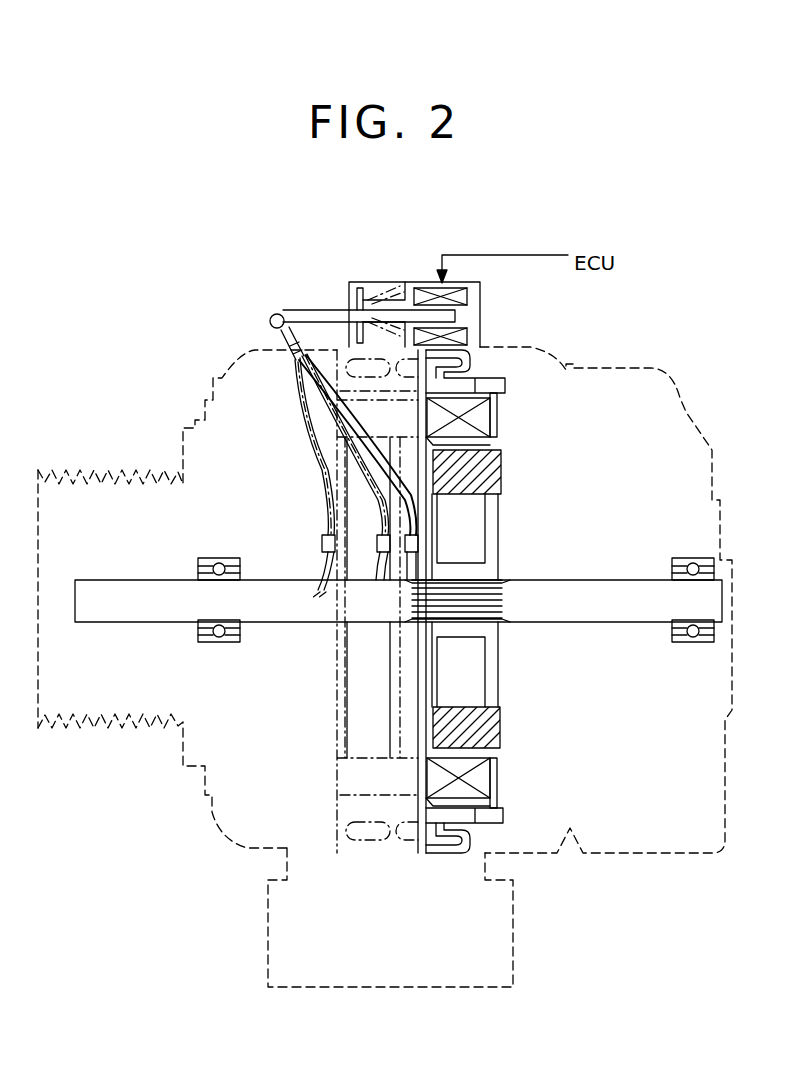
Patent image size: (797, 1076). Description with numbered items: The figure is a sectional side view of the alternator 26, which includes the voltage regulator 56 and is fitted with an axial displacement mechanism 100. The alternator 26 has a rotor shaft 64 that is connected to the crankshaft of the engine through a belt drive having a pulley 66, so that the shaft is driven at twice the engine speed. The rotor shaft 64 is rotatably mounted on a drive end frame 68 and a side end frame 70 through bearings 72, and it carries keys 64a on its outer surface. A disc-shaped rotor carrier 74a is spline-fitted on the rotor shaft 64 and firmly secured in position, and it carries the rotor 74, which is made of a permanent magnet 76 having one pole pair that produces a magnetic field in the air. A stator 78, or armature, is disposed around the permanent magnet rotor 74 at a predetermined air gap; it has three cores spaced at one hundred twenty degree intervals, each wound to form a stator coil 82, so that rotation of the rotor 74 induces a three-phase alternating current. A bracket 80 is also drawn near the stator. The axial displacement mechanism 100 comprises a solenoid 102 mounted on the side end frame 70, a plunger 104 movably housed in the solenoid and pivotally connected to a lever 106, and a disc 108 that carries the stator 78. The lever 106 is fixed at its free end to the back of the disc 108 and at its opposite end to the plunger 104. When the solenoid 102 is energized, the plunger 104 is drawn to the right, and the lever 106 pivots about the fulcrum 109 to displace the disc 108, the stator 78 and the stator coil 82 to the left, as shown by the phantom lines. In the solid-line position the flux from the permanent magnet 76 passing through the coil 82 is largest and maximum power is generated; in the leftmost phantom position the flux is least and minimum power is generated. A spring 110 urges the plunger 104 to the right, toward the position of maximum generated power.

The alternator 26 is at (586, 368).
The voltage regulator 56 is at (515, 940).
The rotor shaft 64 is at (590, 580).
The keys 64a is at (502, 598).
The pulley 66 is at (77, 470).
The drive end frame 68 is at (249, 851).
The side end frame 70 is at (595, 854).
The bearings 72 is at (233, 642).
The rotor 74 is at (510, 462).
The rotor carrier 74a is at (497, 546).
The permanent magnet 76 is at (494, 490).
The stator 78 is at (413, 857).
The bracket 80 is at (506, 388).
The stator coil 82 is at (496, 426).
The axial displacement mechanism 100 is at (320, 302).
The solenoid 102 is at (468, 336).
The plunger 104 is at (341, 312).
The lever 106 is at (298, 390).
The disc 108 is at (418, 808).
The fulcrum 109 is at (268, 329).
The spring 110 is at (370, 296).